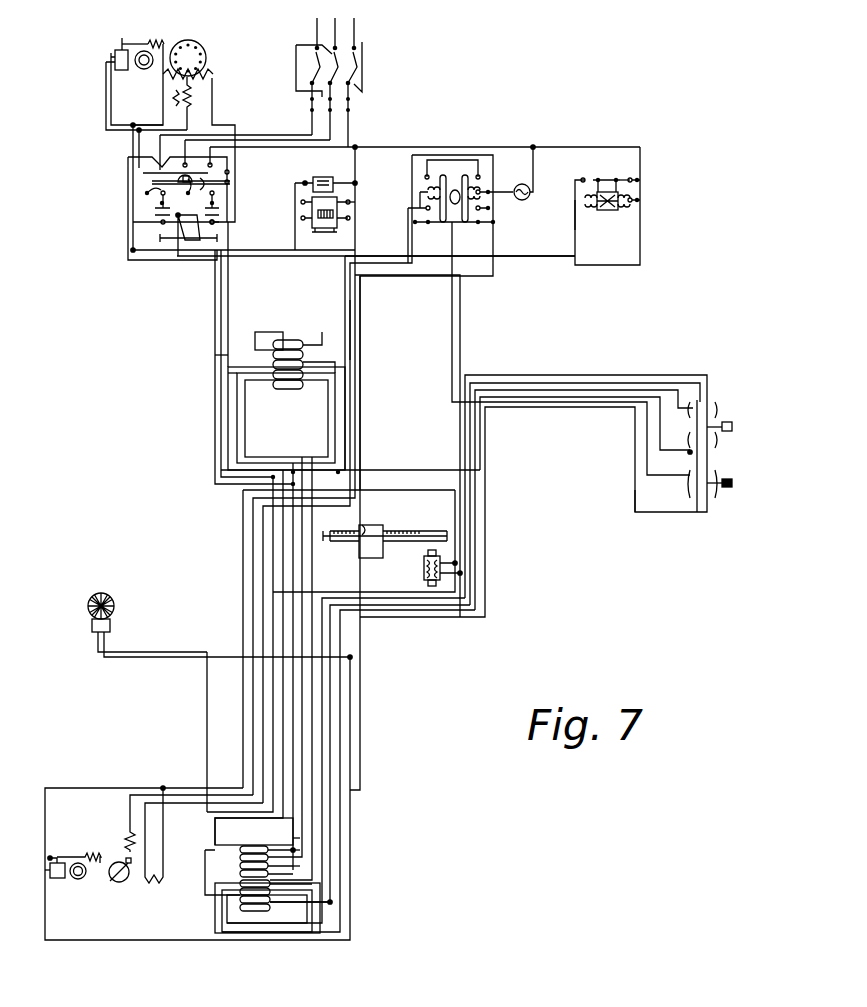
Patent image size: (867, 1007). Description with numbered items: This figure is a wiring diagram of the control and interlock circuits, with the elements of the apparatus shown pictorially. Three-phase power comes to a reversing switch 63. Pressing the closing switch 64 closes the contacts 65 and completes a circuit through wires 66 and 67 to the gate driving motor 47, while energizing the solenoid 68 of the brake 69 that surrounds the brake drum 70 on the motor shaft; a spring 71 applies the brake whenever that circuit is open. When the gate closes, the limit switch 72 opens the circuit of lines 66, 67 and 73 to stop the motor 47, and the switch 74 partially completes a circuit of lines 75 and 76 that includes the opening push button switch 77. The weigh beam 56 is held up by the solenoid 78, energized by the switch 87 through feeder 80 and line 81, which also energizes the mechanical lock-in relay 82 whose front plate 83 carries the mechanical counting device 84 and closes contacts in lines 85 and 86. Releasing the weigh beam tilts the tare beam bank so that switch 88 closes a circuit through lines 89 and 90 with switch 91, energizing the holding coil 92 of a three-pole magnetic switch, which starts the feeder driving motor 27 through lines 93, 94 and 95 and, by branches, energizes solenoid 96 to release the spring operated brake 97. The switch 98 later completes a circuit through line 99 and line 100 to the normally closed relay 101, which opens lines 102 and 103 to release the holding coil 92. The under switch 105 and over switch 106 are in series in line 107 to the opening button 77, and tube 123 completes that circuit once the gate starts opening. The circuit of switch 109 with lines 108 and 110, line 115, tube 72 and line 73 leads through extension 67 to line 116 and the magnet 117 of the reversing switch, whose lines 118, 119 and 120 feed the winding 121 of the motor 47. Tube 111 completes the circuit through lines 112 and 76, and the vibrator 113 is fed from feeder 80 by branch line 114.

The solenoid 96 is at (113, 60).
The spring operated brake 97 is at (160, 42).
The feeder driving motor 27 is at (203, 60).
The motor line 93 is at (172, 107).
The motor line 94 is at (185, 118).
The motor line 95 is at (213, 110).
The reversing switch 63 is at (302, 57).
The holding coil 92 is at (147, 193).
The line 85 is at (305, 187).
The mechanical counting device 84 is at (301, 203).
The mechanical lock-in relay 82 is at (300, 212).
The front plate 83 is at (312, 226).
The line 86 is at (356, 215).
The magnet 117 is at (440, 178).
The line 120 is at (493, 248).
The line 102 is at (622, 178).
The line 103 is at (575, 212).
The normally closed relay 101 is at (606, 211).
The line 100 is at (640, 222).
The line 99 is at (576, 250).
The line 116 is at (415, 292).
The line 118 is at (356, 315).
The line 119 is at (351, 330).
The under switch 105 is at (283, 342).
The over switch 106 is at (322, 344).
The line 110 is at (226, 357).
The switch 109 is at (305, 362).
The line 108 is at (234, 373).
The switch 98 is at (273, 375).
The switch 88 is at (247, 404).
The line 89 is at (239, 417).
The line 90 is at (239, 433).
The line 75 is at (553, 390).
The line 76 is at (595, 383).
The line 73 is at (675, 380).
The opening push button switch 77 is at (733, 426).
The line 107 is at (660, 436).
The wire 67 is at (712, 452).
The contacts 65 is at (690, 496).
The closing switch 64 is at (733, 483).
The wire 66 is at (636, 512).
The weigh beam 56 is at (432, 538).
The solenoid 78 is at (424, 570).
The vibrator 113 is at (91, 594).
The branch line 114 is at (230, 655).
The line 112 is at (207, 713).
The winding 121 is at (124, 834).
The brake 69 is at (58, 858).
The spring 71 is at (92, 856).
The line 81 is at (207, 855).
The switch 91 is at (268, 848).
The feeder 80 is at (300, 838).
The tube 123 is at (300, 850).
The switch 87 is at (300, 866).
The limit switch 72 is at (272, 889).
The tube 111 is at (272, 903).
The solenoid 68 is at (57, 880).
The brake drum 70 is at (80, 880).
The gate driving motor 47 is at (126, 882).
The switch 74 is at (250, 907).
The line 115 is at (283, 934).